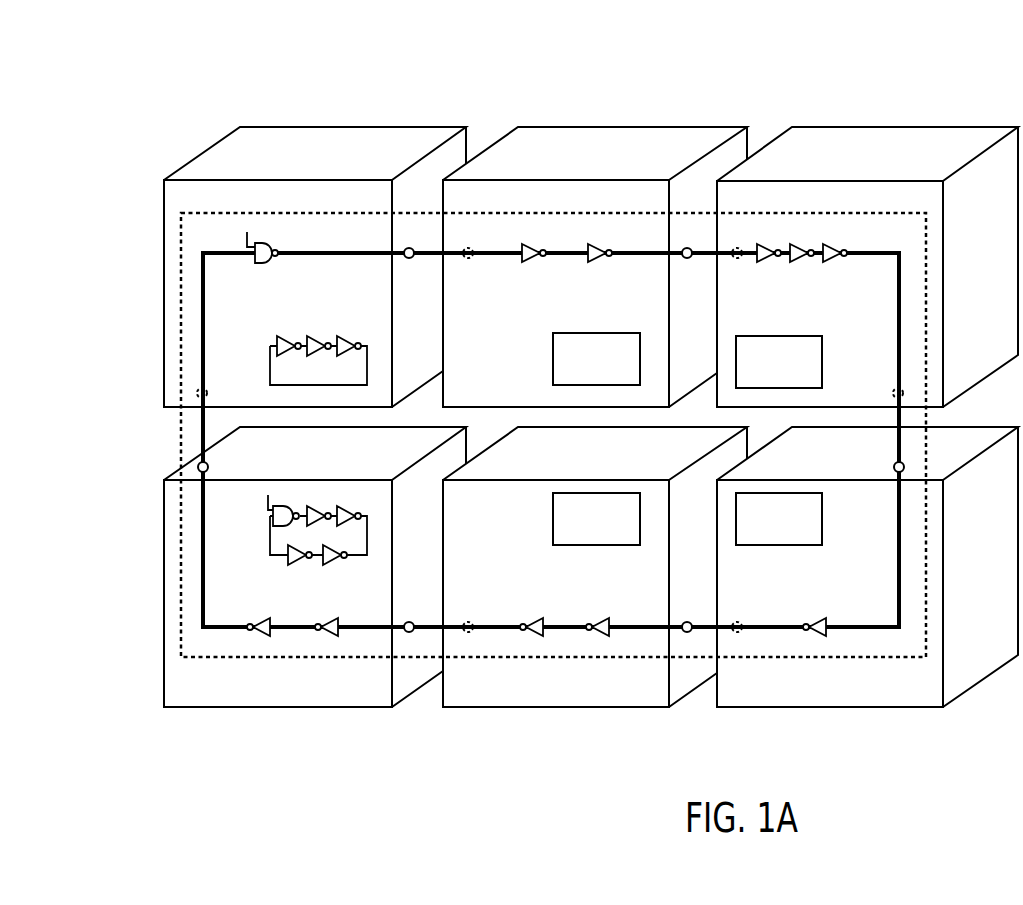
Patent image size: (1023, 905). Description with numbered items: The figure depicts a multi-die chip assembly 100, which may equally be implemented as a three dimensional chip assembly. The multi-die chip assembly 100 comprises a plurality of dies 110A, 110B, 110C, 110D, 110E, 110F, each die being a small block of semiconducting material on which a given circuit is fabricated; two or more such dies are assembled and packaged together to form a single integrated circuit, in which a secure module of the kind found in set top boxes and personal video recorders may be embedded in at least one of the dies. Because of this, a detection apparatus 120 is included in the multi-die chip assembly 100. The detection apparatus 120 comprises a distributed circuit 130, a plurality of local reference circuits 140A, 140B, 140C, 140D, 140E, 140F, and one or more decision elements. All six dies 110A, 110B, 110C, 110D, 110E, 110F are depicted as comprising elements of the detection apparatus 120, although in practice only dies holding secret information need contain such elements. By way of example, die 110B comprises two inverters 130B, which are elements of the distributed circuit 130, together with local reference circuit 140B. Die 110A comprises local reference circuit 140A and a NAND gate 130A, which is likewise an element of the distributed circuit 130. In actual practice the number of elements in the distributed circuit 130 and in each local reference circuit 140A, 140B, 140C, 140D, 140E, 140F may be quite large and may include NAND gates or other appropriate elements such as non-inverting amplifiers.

The multi-die chip assembly 100 is at (192, 84).
The die 110A is at (425, 127).
The die 110B is at (652, 127).
The die 110C is at (918, 127).
The die 110D is at (765, 707).
The die 110E is at (497, 707).
The die 110F is at (363, 707).
The detection apparatus 120 is at (181, 237).
The distributed circuit 130 is at (203, 425).
The NAND gate 130A is at (265, 264).
The inverter 130B is at (533, 263).
The local reference circuit 140A is at (270, 380).
The local reference circuit 140B is at (553, 365).
The local reference circuit 140C is at (816, 336).
The local reference circuit 140D is at (820, 545).
The local reference circuit 140E is at (553, 525).
The local reference circuit 140F is at (348, 558).